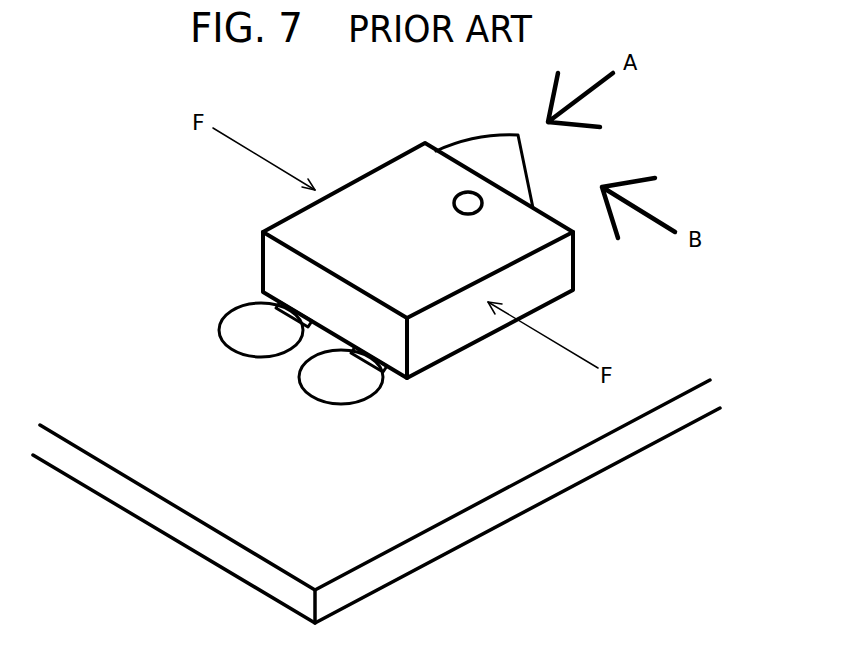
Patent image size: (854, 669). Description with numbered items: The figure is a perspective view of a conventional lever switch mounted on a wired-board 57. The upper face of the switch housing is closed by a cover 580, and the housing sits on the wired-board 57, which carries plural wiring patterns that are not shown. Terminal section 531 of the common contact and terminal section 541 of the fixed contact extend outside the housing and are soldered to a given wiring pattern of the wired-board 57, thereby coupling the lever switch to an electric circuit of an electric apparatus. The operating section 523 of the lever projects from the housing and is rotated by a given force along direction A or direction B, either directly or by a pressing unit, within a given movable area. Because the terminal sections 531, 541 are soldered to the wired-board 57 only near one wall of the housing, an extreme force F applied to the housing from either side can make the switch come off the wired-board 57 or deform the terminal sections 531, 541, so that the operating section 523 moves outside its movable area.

The cover 580 is at (352, 210).
The operating section 523 is at (462, 142).
The terminal section 541 is at (292, 310).
The terminal section 531 is at (365, 353).
The wired-board 57 is at (567, 475).